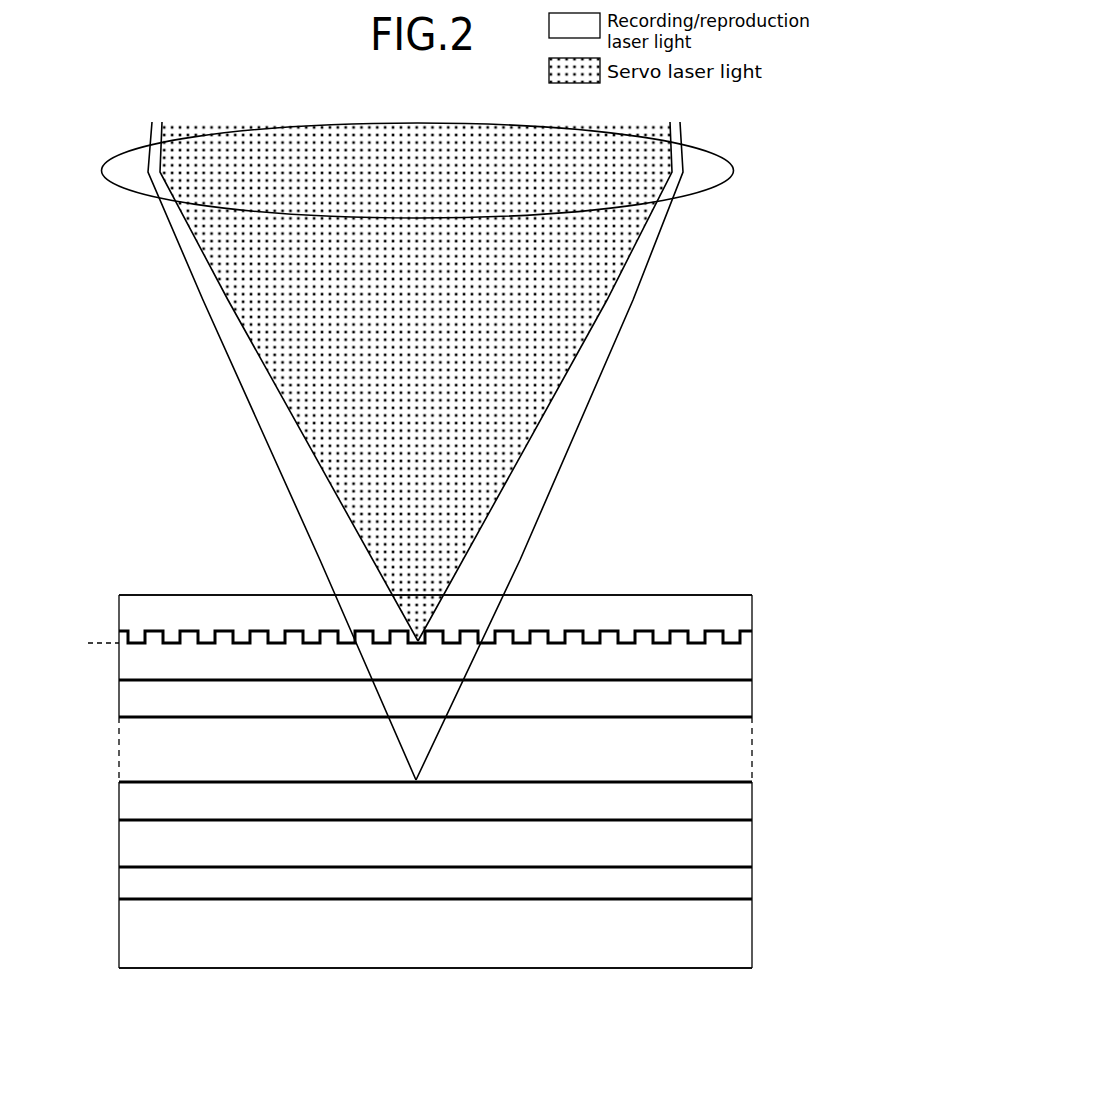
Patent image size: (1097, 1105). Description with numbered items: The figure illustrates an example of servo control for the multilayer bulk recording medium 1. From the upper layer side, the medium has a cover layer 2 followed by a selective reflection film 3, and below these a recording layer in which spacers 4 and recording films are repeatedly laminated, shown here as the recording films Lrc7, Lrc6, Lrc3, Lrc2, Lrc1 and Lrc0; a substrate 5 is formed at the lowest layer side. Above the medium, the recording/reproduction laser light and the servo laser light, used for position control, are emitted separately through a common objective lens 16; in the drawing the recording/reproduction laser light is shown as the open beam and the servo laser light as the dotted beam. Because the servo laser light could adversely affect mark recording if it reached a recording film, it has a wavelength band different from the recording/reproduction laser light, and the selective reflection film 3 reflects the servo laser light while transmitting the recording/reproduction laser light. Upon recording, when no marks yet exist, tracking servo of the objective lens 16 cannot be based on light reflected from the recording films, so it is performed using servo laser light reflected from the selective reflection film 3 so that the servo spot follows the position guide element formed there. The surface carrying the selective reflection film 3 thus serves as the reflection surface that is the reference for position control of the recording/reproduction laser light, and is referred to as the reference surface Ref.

The bulk recording medium 1 is at (638, 996).
The cover layer 2 is at (744, 608).
The selective reflection film 3 is at (752, 630).
The spacers 4 is at (588, 695).
The substrate 5 is at (737, 935).
The objective lens 16 is at (733, 172).
The recording film Lrc7 is at (737, 682).
The recording film Lrc6 is at (737, 719).
The recording film Lrc3 is at (737, 784).
The recording film Lrc2 is at (737, 822).
The recording film Lrc1 is at (737, 869).
The recording film Lrc0 is at (737, 901).
The reference surface Ref is at (81, 643).